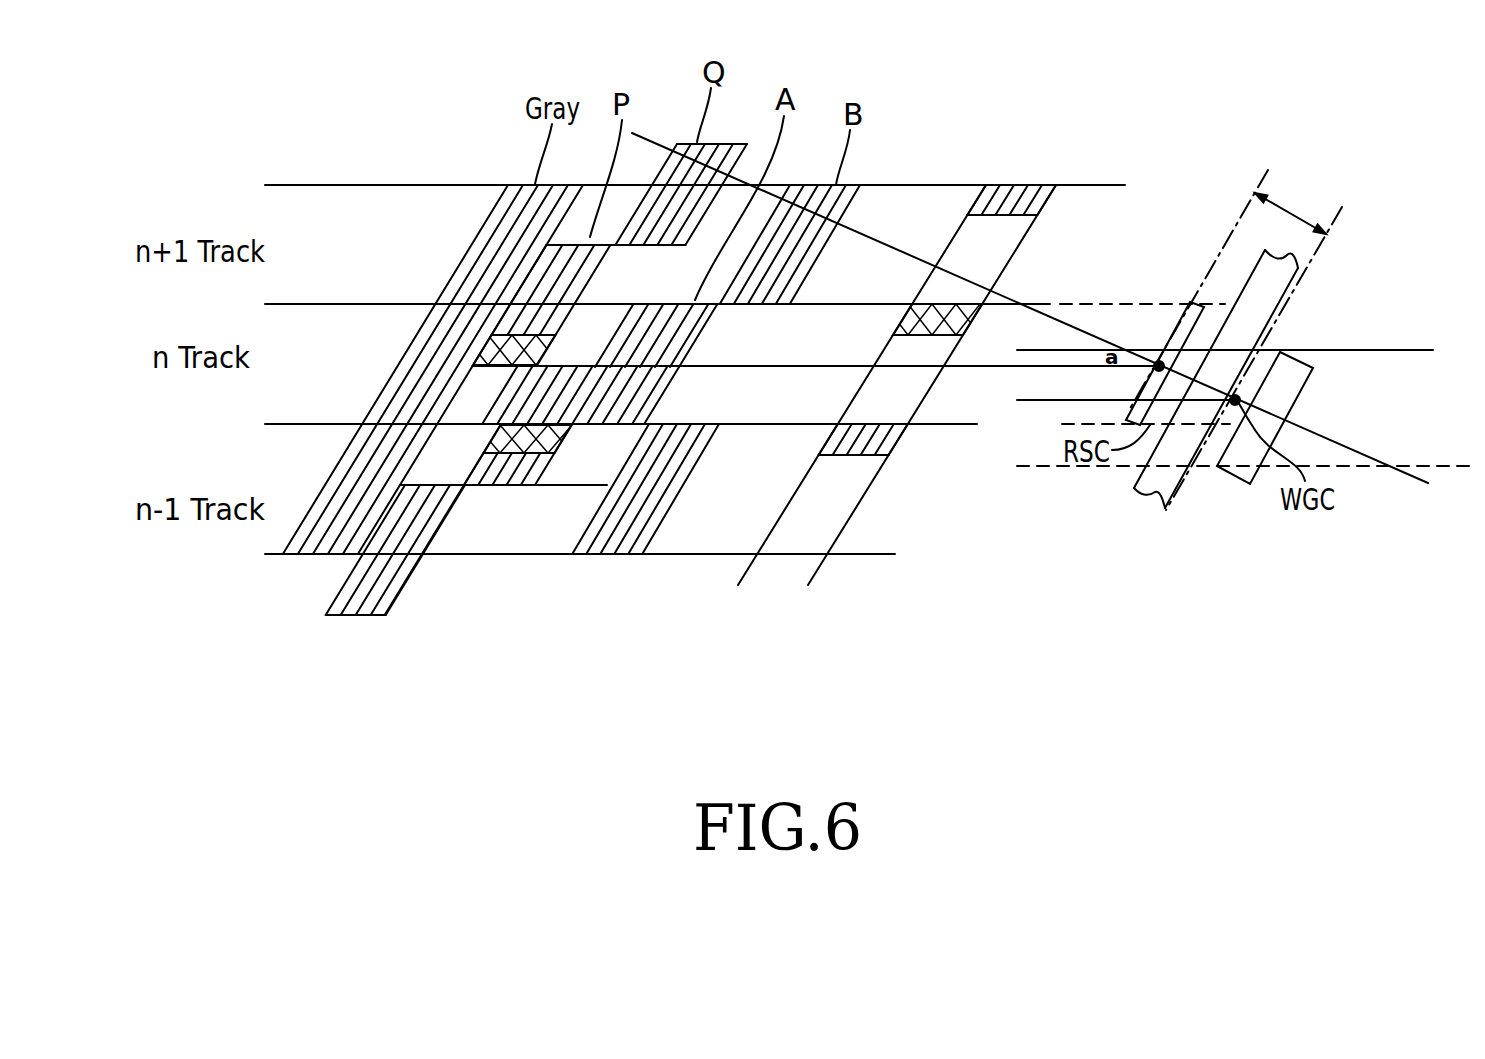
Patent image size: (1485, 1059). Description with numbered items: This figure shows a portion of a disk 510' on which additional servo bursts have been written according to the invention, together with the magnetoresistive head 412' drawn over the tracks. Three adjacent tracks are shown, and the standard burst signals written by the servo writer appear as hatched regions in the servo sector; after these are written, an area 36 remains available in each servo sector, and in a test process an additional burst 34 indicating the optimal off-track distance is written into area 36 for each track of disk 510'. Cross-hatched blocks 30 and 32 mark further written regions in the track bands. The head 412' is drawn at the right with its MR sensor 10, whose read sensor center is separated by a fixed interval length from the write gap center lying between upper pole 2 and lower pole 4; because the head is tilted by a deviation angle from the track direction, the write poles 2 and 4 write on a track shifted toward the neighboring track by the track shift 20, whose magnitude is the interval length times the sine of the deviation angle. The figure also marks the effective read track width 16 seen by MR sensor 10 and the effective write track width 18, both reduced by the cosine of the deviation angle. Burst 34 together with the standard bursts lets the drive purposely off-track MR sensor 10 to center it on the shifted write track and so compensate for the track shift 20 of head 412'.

The upper pole 2 is at (1240, 468).
The lower pole 4 is at (1277, 285).
The MR sensor layer 10 is at (1182, 316).
The effective read track width 16 is at (1083, 423).
The effective write track width 18 is at (1390, 351).
The track shift 20 is at (1040, 367).
The servo block 30 is at (553, 346).
The servo block 32 is at (500, 448).
The additional burst 34 is at (937, 337).
The area 36 is at (812, 572).
The disk 510' is at (1030, 247).
The magnetoresistive head 412' is at (1235, 296).